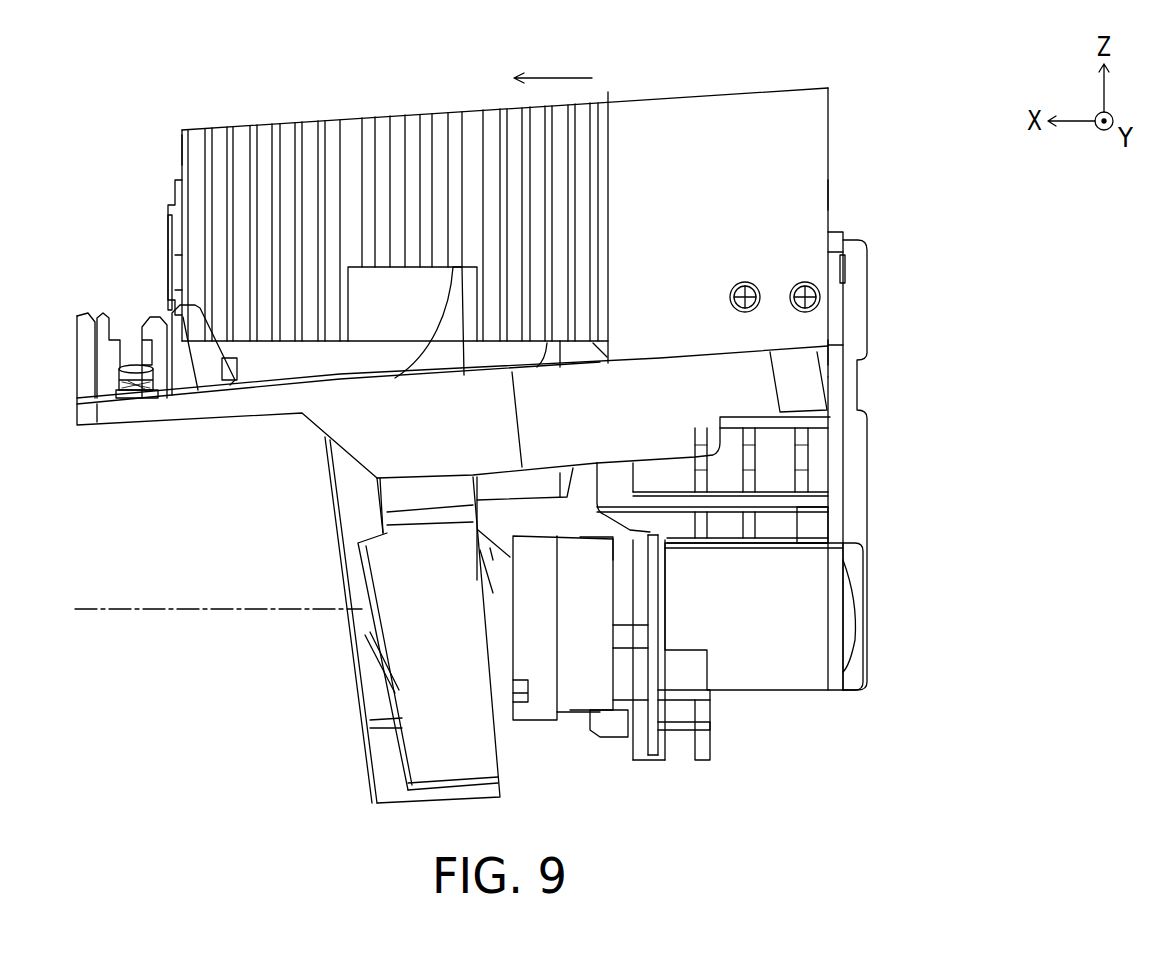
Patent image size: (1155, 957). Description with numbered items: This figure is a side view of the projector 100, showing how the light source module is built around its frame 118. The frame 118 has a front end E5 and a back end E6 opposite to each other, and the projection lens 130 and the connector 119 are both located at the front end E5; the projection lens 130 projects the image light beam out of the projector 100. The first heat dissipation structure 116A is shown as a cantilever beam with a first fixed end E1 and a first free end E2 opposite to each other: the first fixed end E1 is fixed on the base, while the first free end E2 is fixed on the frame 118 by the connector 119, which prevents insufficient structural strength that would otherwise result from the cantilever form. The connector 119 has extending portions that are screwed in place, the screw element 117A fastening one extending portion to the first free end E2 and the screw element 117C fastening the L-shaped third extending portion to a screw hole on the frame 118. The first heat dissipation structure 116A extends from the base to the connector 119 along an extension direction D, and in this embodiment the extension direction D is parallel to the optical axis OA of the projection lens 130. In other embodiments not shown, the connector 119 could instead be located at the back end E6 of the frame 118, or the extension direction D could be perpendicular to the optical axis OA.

The projector 100 is at (876, 92).
The first heat dissipation structure 116A is at (830, 139).
The screw element 117A is at (168, 232).
The screw element 117C is at (137, 362).
The frame 118 is at (340, 416).
The connector 119 is at (163, 200).
The projection lens 130 is at (496, 700).
The first fixed end E1 is at (838, 197).
The first free end E2 is at (170, 154).
The front end E5 is at (370, 504).
The back end E6 is at (838, 356).
The optical axis OA is at (192, 612).
The extension direction D is at (556, 74).